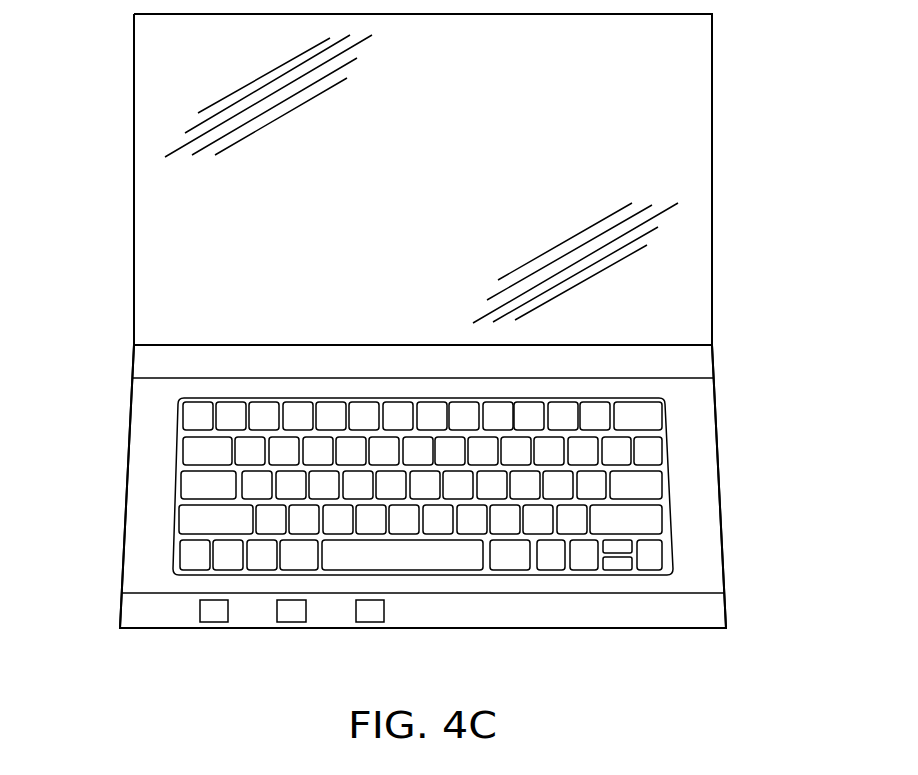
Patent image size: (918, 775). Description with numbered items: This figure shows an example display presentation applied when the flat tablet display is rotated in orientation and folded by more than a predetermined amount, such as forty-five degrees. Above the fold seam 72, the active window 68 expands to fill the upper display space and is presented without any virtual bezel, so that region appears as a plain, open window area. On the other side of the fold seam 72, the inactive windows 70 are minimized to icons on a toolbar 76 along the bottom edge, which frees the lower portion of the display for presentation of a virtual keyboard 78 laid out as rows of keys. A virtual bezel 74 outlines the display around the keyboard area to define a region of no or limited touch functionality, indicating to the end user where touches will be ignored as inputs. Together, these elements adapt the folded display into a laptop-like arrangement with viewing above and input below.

The active window 68 is at (437, 195).
The inactive windows 70 is at (213, 622).
The fold seam 72 is at (716, 345).
The virtual bezel 74 is at (150, 474).
The toolbar 76 is at (715, 613).
The virtual keyboard 78 is at (670, 487).